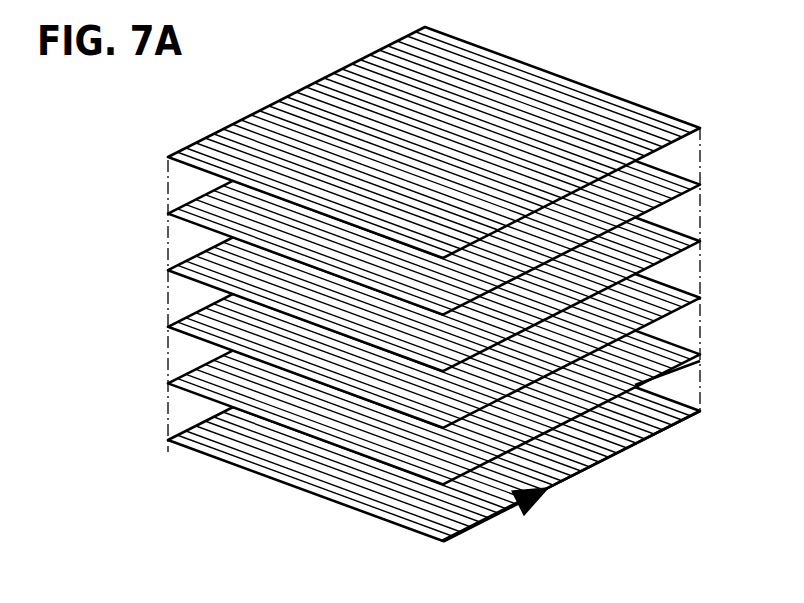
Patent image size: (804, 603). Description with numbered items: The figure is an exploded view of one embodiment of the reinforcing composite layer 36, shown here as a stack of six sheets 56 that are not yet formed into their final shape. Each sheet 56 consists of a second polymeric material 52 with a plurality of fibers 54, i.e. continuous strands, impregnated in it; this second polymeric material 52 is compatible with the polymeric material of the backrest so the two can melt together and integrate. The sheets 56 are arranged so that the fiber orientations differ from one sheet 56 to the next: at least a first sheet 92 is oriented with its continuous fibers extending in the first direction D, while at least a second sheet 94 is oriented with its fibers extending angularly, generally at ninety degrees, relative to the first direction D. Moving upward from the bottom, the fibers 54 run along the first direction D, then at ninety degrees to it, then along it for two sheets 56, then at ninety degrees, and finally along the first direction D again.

The reinforcing composite layer 36 is at (418, 295).
The second polymeric material 52 is at (443, 543).
The fibers 54 is at (200, 376).
The sheets 56 is at (168, 163).
The first sheet 92 is at (607, 460).
The second sheet 94 is at (658, 362).
The first direction D is at (488, 518).